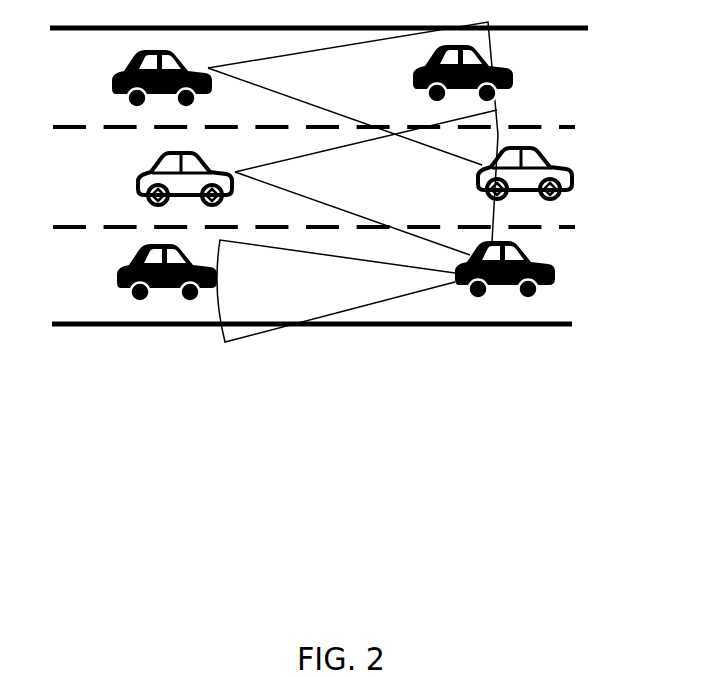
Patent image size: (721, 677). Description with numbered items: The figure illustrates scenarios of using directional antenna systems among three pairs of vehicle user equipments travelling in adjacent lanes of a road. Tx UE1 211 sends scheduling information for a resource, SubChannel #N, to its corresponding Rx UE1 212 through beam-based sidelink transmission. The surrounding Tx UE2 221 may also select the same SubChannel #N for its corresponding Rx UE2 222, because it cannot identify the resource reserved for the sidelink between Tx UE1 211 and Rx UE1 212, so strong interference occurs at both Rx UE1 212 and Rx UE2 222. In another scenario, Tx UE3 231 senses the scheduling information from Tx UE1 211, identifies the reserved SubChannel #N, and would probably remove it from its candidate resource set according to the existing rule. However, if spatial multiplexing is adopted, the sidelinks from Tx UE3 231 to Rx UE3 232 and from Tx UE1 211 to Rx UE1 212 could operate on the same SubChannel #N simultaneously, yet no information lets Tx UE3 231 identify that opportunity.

The Tx UE1 211 is at (135, 163).
The Rx UE1 212 is at (570, 163).
The Tx UE2 221 is at (113, 60).
The Rx UE2 222 is at (512, 63).
The Tx UE3 231 is at (590, 233).
The Rx UE3 232 is at (120, 255).